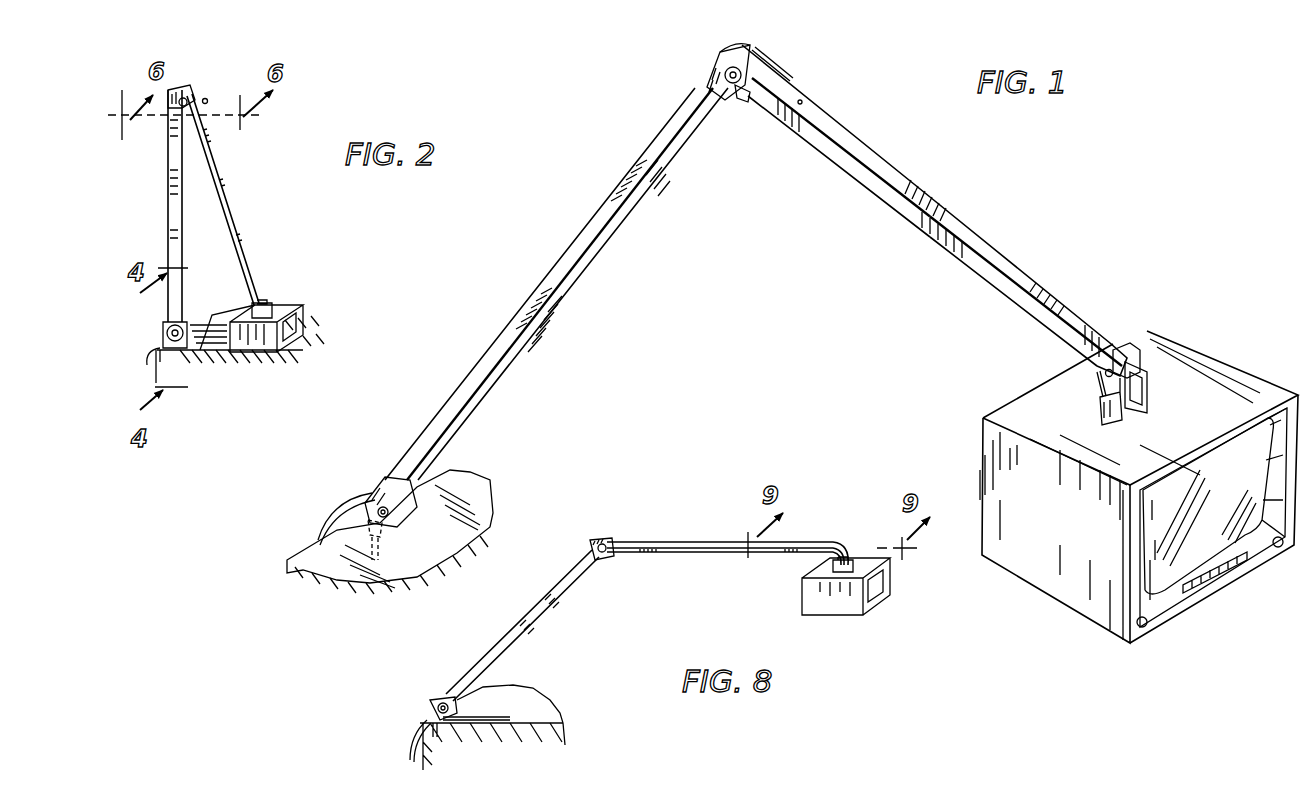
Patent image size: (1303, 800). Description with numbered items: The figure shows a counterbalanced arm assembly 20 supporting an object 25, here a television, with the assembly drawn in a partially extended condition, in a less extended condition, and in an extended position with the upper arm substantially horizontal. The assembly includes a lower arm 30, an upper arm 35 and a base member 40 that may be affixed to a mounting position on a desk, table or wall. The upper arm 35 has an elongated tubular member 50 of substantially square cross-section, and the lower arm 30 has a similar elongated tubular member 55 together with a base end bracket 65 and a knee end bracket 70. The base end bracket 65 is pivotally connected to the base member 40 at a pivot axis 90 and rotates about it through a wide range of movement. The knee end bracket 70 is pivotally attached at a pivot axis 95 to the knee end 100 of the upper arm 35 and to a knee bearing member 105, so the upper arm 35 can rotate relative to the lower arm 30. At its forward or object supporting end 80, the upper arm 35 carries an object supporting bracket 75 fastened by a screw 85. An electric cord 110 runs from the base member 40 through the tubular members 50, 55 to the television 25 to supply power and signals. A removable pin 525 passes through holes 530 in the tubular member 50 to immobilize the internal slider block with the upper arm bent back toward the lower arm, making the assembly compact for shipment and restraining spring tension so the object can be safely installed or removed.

In FIG. 1, the counterbalanced arm assembly 20 is at (823, 63).
In FIG. 2, the counterbalanced arm assembly 20 is at (260, 187).
In FIG. 8, the counterbalanced arm assembly 20 is at (608, 517).
In FIG. 1, the object 25 is at (1247, 390).
In FIG. 2, the object 25 is at (293, 305).
In FIG. 8, the object 25 is at (807, 596).
In FIG. 1, the lower arm 30 is at (593, 212).
In FIG. 2, the lower arm 30 is at (167, 205).
In FIG. 8, the lower arm 30 is at (527, 613).
In FIG. 1, the upper arm 35 is at (965, 224).
In FIG. 2, the upper arm 35 is at (256, 250).
In FIG. 8, the upper arm 35 is at (803, 548).
In FIG. 1, the base member 40 is at (333, 517).
In FIG. 8, the base member 40 is at (427, 723).
In FIG. 1, the elongated tubular member 50 is at (890, 165).
In FIG. 1, the elongated tubular member 55 is at (543, 290).
In FIG. 1, the base end bracket 65 is at (383, 480).
In FIG. 2, the base end bracket 65 is at (166, 333).
In FIG. 8, the base end bracket 65 is at (440, 700).
In FIG. 1, the knee end bracket 70 is at (707, 80).
In FIG. 2, the knee end bracket 70 is at (170, 108).
In FIG. 8, the knee end bracket 70 is at (590, 543).
In FIG. 1, the object supporting bracket 75 is at (1173, 363).
In FIG. 1, the object supporting end 80 is at (1143, 363).
In FIG. 1, the screw 85 is at (1093, 367).
In FIG. 1, the pivot axis 90 is at (372, 502).
In FIG. 1, the pivot axis 95 is at (723, 57).
In FIG. 1, the knee end 100 is at (740, 90).
In FIG. 1, the knee bearing member 105 is at (745, 44).
In FIG. 1, the electric cord 110 is at (342, 507).
In FIG. 2, the removable pin 525 is at (205, 100).
In FIG. 1, the hole 530 is at (807, 100).
In FIG. 8, the hole 530 is at (632, 540).